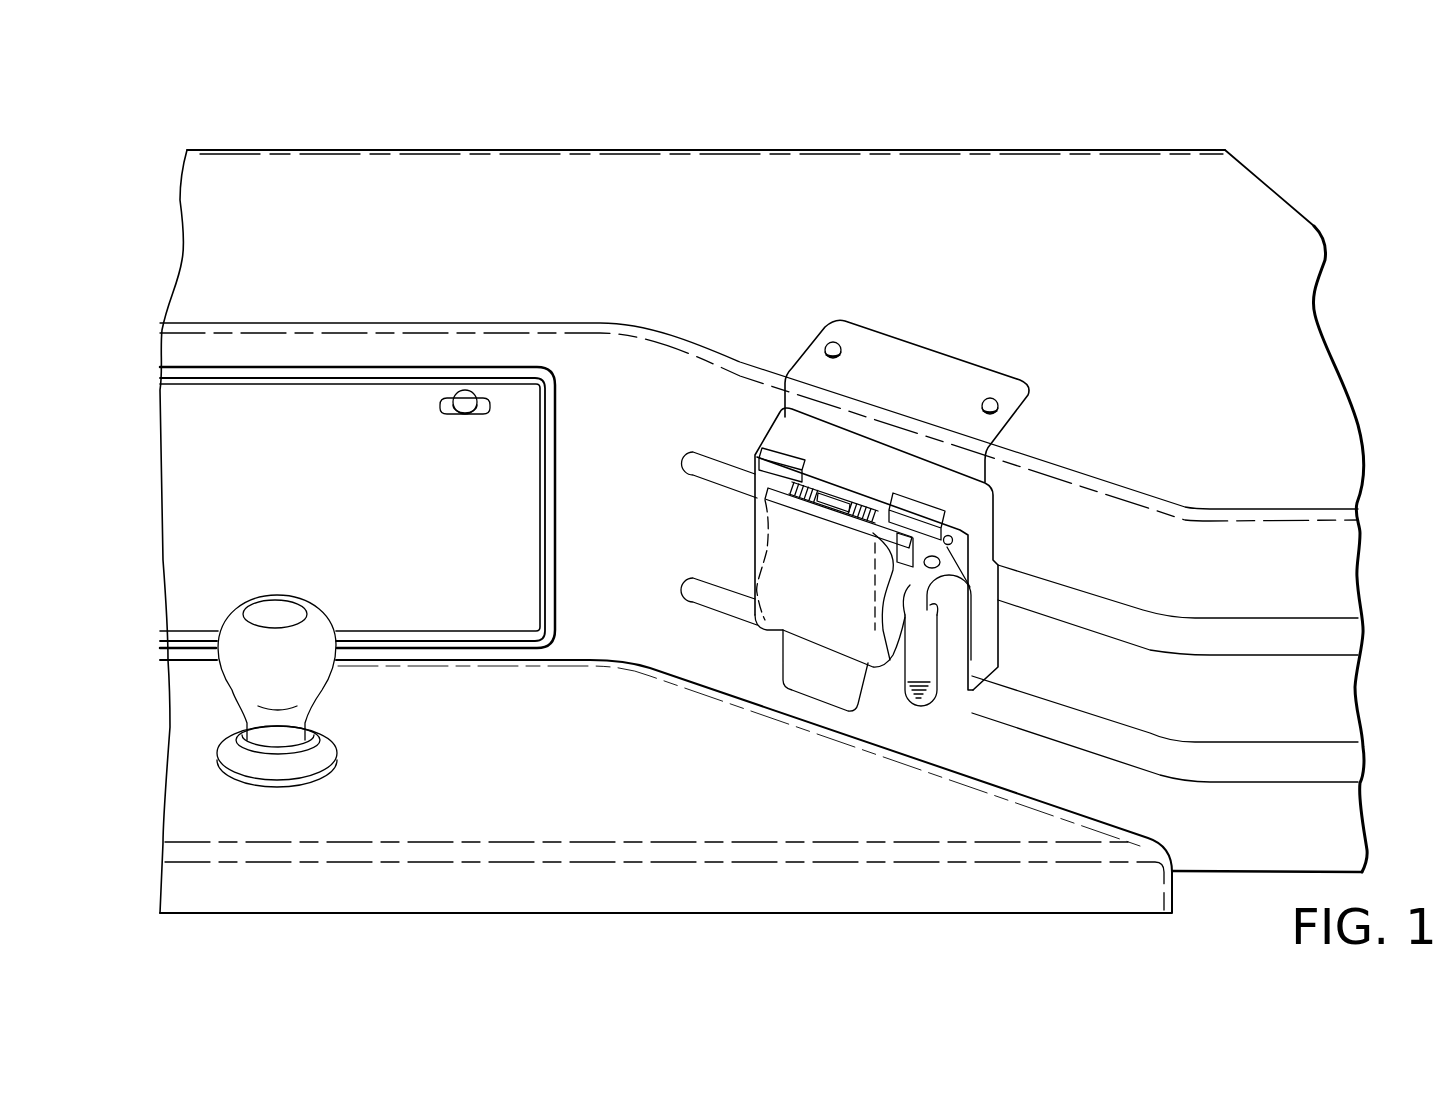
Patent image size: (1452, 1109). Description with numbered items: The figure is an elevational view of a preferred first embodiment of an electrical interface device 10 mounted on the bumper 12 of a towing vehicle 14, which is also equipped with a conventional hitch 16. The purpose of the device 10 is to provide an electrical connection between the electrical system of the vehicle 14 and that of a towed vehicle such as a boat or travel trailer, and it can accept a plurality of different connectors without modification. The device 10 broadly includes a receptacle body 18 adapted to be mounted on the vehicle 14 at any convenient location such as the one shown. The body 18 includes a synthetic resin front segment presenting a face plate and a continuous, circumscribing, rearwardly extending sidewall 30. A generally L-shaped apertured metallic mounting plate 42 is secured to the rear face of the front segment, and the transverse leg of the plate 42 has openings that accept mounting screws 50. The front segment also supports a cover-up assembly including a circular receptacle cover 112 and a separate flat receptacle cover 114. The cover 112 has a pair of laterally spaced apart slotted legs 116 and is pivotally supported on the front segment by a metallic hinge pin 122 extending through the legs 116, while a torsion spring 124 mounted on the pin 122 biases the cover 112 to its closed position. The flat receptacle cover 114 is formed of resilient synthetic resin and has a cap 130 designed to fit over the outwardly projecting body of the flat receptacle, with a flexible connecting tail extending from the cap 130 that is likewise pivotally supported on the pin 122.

The electrical interface device 10 is at (1050, 352).
The bumper 12 is at (1298, 525).
The towing vehicle 14 is at (1056, 160).
The hitch 16 is at (314, 677).
The receptacle body 18 is at (1015, 560).
The sidewall 30 is at (990, 612).
The mounting plate 42 is at (912, 352).
The mounting screws 50 is at (833, 345).
The circular receptacle cover 112 is at (824, 692).
The flat receptacle cover 114 is at (925, 700).
The slotted legs 116 is at (755, 455).
The hinge pin 122 is at (835, 487).
The torsion spring 124 is at (860, 505).
The cap 130 is at (950, 640).